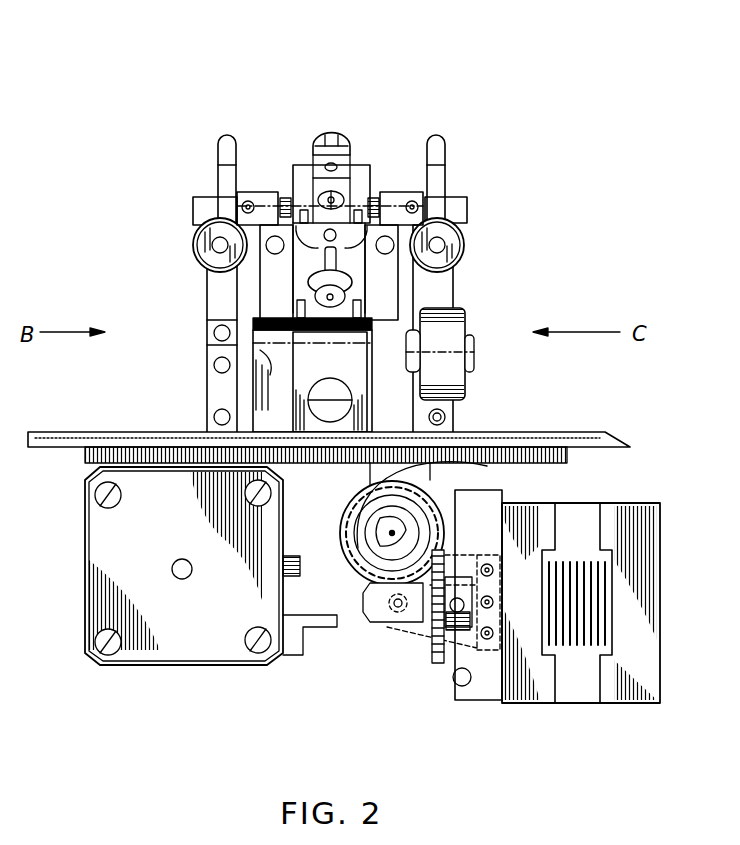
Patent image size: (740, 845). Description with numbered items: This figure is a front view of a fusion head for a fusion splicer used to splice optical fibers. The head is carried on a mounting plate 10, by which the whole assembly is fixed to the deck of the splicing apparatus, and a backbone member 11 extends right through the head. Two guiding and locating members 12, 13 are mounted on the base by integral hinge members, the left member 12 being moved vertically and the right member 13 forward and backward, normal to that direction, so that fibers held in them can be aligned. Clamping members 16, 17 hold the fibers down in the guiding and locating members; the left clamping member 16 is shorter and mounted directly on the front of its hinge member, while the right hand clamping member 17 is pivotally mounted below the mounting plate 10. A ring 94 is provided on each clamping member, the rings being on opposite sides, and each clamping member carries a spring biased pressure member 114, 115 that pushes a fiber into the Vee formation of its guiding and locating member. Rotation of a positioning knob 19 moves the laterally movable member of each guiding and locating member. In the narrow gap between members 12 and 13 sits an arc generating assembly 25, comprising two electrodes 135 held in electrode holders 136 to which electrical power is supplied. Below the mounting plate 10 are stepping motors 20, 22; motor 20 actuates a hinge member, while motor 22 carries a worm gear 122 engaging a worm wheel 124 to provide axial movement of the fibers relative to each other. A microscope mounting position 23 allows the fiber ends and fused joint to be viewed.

The mounting plate 10 is at (600, 433).
The backbone member 11 is at (312, 379).
The guiding and locating member 12 is at (195, 210).
The guiding and locating member 13 is at (462, 208).
The clamping member 16 is at (244, 192).
The clamping member 17 is at (398, 192).
The positioning knob 19 is at (194, 256).
The stepping motor 20 is at (98, 588).
The stepping motor 22 is at (643, 613).
The microscope mounting position 23 is at (272, 370).
The arc generating assembly 25 is at (347, 136).
The ring 94 is at (223, 140).
The pressure member 114 is at (288, 195).
The pressure member 115 is at (372, 198).
The worm gear 122 is at (388, 624).
The worm wheel 124 is at (362, 580).
The electrode 135 is at (333, 222).
The electrode holder 136 is at (318, 146).